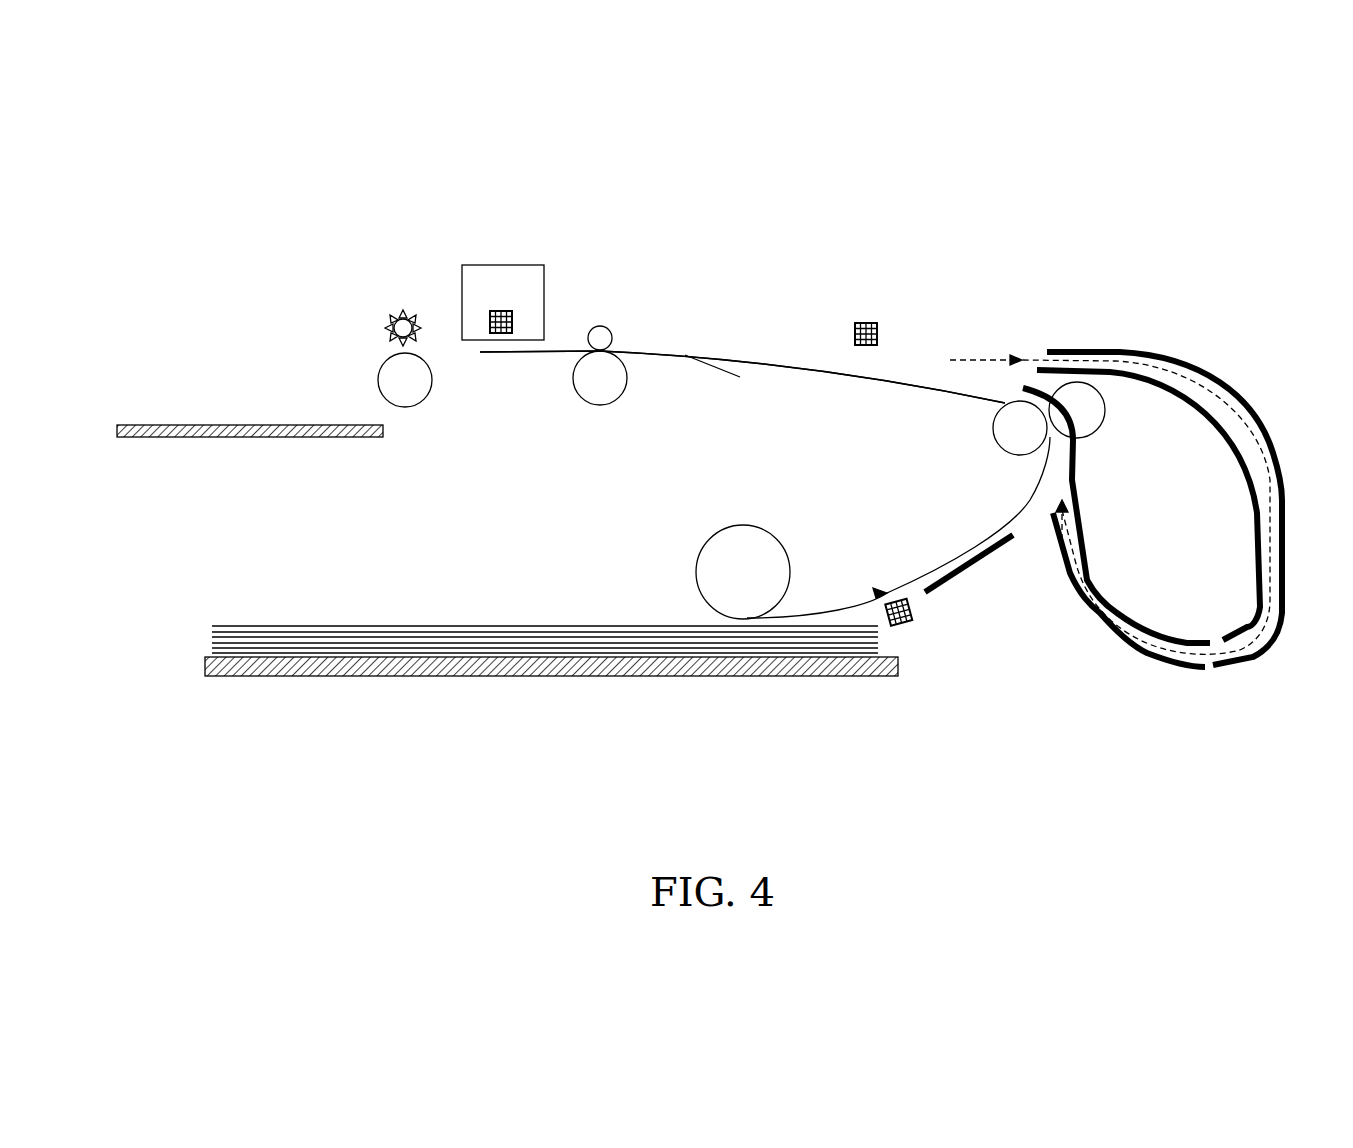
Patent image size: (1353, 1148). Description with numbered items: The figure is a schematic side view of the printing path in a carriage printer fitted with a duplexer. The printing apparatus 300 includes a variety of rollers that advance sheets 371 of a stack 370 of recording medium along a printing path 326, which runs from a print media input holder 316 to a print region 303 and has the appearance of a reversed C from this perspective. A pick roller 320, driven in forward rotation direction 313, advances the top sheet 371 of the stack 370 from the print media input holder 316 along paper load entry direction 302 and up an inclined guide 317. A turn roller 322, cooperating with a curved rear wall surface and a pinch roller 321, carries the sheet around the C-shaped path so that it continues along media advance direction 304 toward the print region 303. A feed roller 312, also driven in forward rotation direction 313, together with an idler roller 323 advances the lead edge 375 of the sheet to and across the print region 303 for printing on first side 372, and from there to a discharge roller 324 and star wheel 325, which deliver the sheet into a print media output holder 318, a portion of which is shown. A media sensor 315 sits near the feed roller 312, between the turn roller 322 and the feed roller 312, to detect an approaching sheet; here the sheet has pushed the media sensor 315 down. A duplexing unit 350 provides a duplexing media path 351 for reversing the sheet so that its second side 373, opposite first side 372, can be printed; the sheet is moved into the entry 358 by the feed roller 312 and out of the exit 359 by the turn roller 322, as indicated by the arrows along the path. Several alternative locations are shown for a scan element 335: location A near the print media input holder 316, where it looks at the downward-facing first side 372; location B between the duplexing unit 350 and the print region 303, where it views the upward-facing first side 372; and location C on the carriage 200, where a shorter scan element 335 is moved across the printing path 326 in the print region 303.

The printing apparatus 300 is at (345, 166).
The carriage 200 is at (496, 265).
The scan element 335 is at (980, 644).
The star wheel 325 is at (393, 312).
The discharge roller 324 is at (427, 388).
The print media output holder 318 is at (262, 424).
The lead edge 375 is at (478, 365).
The print region 303 is at (520, 343).
The idler roller 323 is at (609, 328).
The feed roller 312 is at (622, 381).
The media sensor 315 is at (697, 362).
The first side 372 is at (743, 350).
The sheet 371 is at (852, 380).
The second side 373 is at (927, 383).
The media advance direction 304 is at (640, 230).
The duplexing media path 351 is at (1000, 348).
The entry 358 is at (1037, 340).
The duplexing unit 350 is at (1192, 325).
The turn roller 322 is at (995, 420).
The pinch roller 321 is at (1103, 420).
The pick roller 320 is at (700, 548).
The forward rotation direction 313 is at (807, 585).
The inclined guide 317 is at (975, 560).
The exit 359 is at (1045, 525).
The print media input holder 316 is at (420, 678).
The stack 370 is at (193, 640).
The paper load entry direction 302 is at (643, 735).
The printing path 326 is at (1185, 715).